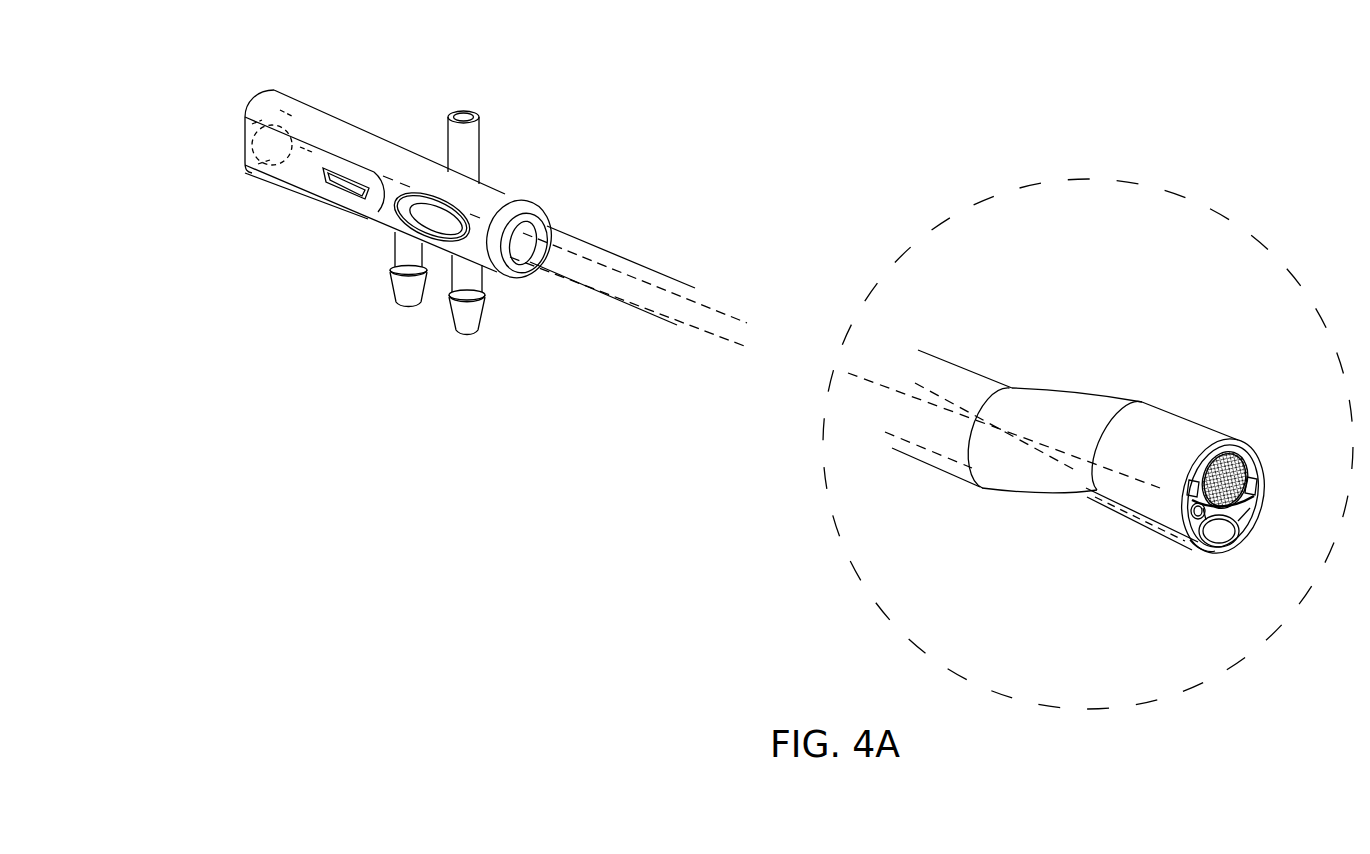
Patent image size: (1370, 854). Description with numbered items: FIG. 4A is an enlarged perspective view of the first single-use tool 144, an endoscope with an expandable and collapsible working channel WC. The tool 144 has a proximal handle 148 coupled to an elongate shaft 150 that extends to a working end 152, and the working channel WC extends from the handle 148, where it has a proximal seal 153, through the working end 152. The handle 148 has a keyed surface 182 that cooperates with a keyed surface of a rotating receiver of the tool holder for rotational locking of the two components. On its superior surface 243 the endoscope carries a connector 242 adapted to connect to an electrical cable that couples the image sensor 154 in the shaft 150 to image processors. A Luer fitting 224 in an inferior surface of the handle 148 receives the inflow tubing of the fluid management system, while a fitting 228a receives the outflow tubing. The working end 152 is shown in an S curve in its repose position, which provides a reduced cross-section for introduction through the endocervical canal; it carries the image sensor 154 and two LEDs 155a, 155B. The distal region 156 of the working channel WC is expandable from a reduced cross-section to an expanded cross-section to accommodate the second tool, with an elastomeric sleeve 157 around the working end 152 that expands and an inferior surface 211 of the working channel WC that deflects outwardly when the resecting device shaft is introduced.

The first single-use tool 144 is at (727, 86).
The superior surface 243 is at (404, 151).
The proximal seal 153 is at (246, 149).
The keyed surface 182 is at (296, 176).
The connector 242 is at (477, 137).
The proximal handle 148 is at (505, 193).
The fitting 228a is at (392, 284).
The Luer fitting 224 is at (461, 318).
The elongate shaft 150 is at (655, 268).
The working channel WC is at (598, 297).
The working end 152 is at (1179, 347).
The distal region of the working channel 156 is at (1105, 500).
The image sensor 154 is at (1248, 447).
The LED 155B is at (1258, 483).
The LED 155a is at (1186, 494).
The elastomeric sleeve 157 is at (1240, 535).
The inferior surface of the working channel 211 is at (1200, 556).